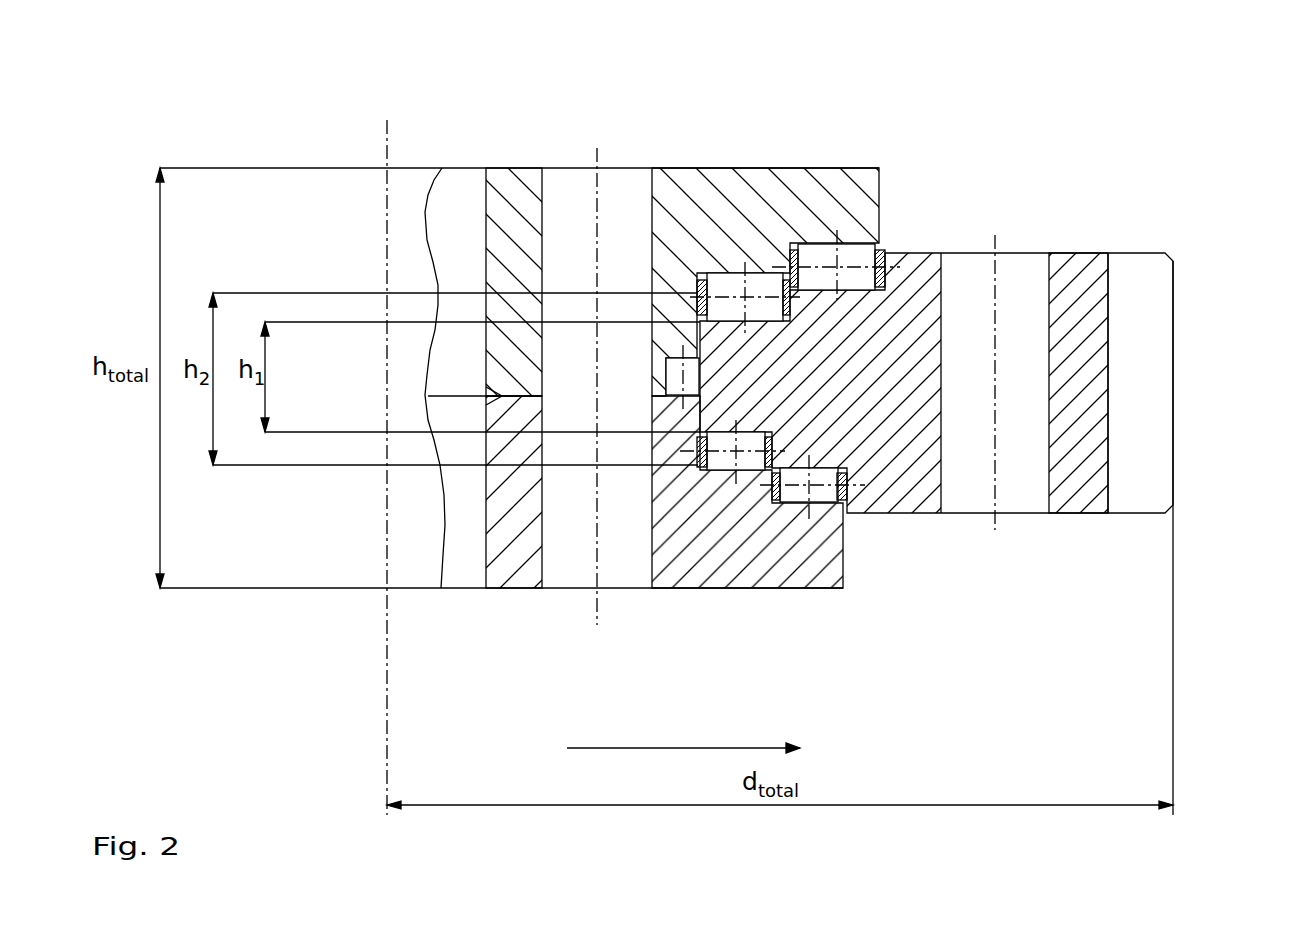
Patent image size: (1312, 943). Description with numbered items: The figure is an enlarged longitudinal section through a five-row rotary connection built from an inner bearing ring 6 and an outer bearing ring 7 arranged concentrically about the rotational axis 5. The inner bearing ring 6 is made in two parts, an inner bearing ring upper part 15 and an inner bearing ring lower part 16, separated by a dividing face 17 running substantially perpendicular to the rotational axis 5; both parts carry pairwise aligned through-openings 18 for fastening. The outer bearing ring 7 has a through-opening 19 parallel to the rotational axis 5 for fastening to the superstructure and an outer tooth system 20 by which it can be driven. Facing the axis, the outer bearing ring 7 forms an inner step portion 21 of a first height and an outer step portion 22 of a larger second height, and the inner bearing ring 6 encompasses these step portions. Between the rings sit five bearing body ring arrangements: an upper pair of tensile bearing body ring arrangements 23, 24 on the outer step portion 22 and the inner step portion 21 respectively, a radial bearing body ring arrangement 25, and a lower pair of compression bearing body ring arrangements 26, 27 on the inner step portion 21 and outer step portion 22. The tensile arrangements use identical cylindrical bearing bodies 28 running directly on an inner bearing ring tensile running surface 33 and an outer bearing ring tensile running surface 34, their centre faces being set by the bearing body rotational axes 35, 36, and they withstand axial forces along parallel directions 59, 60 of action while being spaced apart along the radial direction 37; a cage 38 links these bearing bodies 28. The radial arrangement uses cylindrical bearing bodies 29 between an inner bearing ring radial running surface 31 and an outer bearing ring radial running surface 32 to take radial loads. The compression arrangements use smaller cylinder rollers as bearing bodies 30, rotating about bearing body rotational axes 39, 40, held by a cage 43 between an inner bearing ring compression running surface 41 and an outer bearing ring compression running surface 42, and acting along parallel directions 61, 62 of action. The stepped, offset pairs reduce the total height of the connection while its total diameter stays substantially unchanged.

The rotational axis 5 is at (388, 557).
The inner bearing ring 6 is at (760, 166).
The outer bearing ring 7 is at (1187, 320).
The inner bearing ring upper part 15 is at (490, 272).
The inner bearing ring lower part 16 is at (490, 525).
The dividing face 17 is at (450, 396).
The through-openings 18 is at (615, 582).
The through-opening 19 is at (1033, 510).
The outer tooth system 20 is at (1153, 462).
The inner step portion 21 is at (830, 335).
The outer step portion 22 is at (921, 275).
The tensile bearing body ring arrangement 23 is at (760, 215).
The tensile bearing body ring arrangement 24 is at (735, 273).
The radial bearing body ring arrangement 25 is at (655, 374).
The compression bearing body ring arrangement 26 is at (735, 487).
The compression bearing body ring arrangement 27 is at (847, 520).
The bearing bodies 28 is at (790, 255).
The bearing bodies 29 is at (485, 170).
The bearing bodies 30 is at (808, 505).
The inner bearing ring radial running surface 31 is at (650, 392).
The outer bearing ring radial running surface 32 is at (700, 380).
The inner bearing ring tensile running surface 33 is at (812, 245).
The outer bearing ring tensile running surface 34 is at (745, 320).
The bearing body rotational axis 35 is at (826, 253).
The bearing body rotational axis 36 is at (695, 285).
The radial direction 37 is at (703, 745).
The cage 38 is at (540, 170).
The bearing body rotational axis 39 is at (787, 413).
The bearing body rotational axis 40 is at (852, 503).
The inner bearing ring compression running surface 41 is at (783, 377).
The outer bearing ring compression running surface 42 is at (717, 470).
The cage 43 is at (710, 470).
The direction of action 59 is at (818, 253).
The direction of action 60 is at (711, 266).
The direction of action 61 is at (801, 517).
The direction of action 62 is at (847, 520).